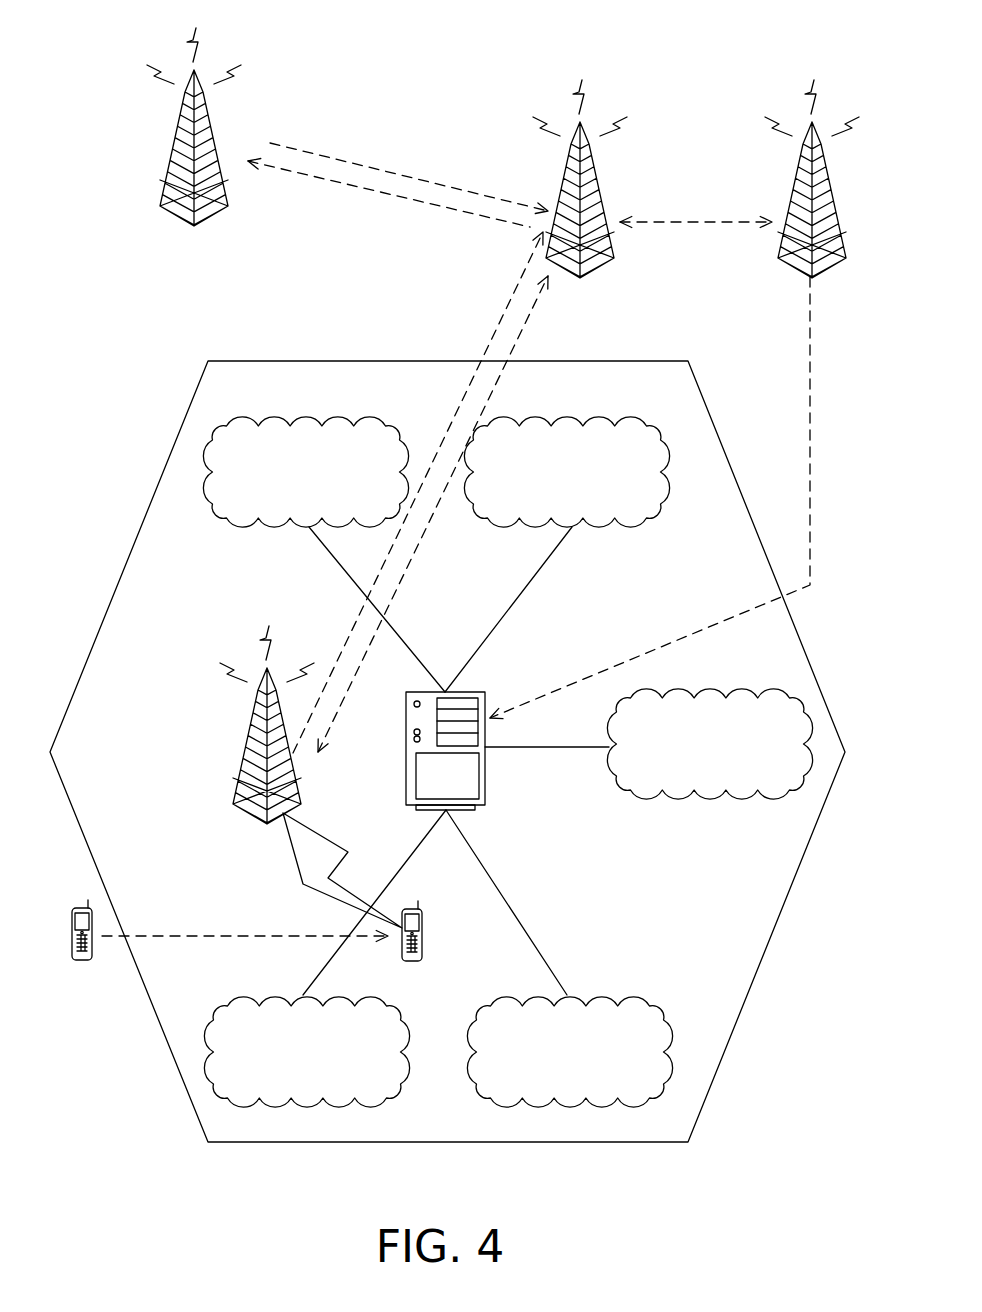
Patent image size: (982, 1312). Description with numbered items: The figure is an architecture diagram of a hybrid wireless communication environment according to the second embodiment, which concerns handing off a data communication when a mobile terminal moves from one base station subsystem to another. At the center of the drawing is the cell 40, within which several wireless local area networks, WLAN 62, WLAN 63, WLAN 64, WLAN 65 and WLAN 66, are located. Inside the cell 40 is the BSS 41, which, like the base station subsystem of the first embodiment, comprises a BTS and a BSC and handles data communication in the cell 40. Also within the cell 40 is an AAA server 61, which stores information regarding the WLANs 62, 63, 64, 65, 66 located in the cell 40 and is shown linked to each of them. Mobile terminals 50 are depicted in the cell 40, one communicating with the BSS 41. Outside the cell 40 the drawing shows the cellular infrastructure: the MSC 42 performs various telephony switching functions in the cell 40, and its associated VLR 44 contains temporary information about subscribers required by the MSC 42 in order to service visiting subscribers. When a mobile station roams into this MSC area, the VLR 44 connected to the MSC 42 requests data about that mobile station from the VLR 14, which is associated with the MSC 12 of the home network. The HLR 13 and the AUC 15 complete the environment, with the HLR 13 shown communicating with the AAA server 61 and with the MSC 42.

The MSC 12 is at (154, 127).
The VLR 14 is at (184, 108).
The HLR 13 is at (772, 179).
The AUC 15 is at (803, 161).
The MSC 42 is at (540, 179).
The VLR 44 is at (571, 159).
The cell 40 is at (308, 361).
The BSS 41 is at (255, 706).
The mobile terminal 50 is at (88, 893).
The AAA server 61 is at (468, 692).
The WLAN 62 is at (308, 417).
The WLAN 63 is at (568, 417).
The WLAN 64 is at (713, 690).
The WLAN 65 is at (624, 997).
The WLAN 66 is at (252, 997).